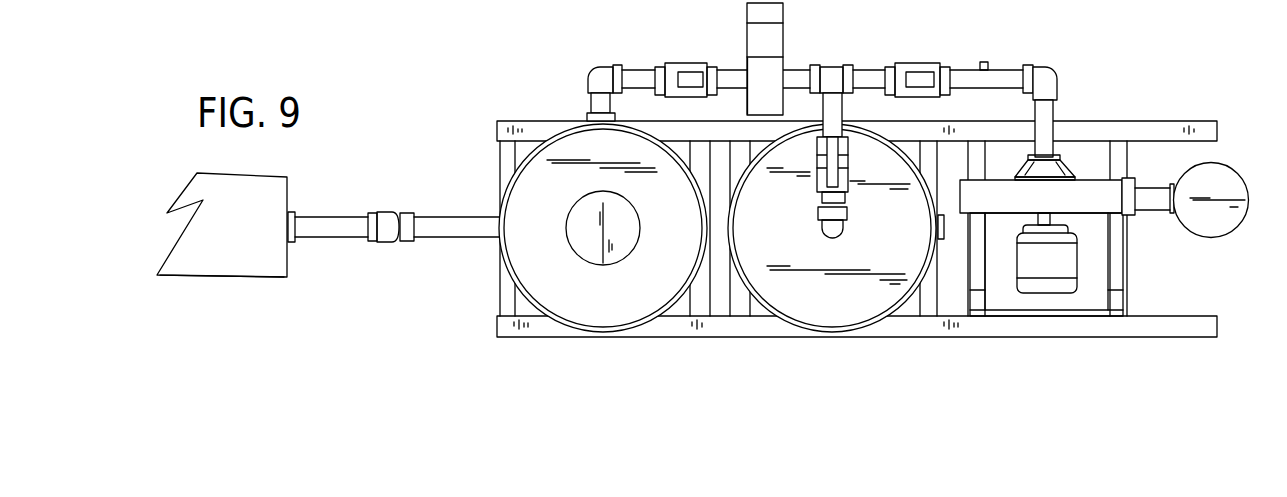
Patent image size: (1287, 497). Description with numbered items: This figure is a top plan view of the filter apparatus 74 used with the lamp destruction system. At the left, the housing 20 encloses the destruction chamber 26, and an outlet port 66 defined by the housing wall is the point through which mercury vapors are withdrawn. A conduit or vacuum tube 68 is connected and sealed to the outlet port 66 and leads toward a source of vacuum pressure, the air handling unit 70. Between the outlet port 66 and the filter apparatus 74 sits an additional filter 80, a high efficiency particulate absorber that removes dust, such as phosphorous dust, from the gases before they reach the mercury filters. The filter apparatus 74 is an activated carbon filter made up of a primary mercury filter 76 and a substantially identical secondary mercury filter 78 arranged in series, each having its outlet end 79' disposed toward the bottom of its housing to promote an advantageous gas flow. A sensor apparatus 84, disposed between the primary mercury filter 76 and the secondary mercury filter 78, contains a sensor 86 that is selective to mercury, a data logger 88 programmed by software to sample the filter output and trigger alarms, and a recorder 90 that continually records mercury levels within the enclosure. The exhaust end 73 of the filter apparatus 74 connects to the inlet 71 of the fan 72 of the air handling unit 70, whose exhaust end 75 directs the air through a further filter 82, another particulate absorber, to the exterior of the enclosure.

The housing 20 is at (256, 251).
The destruction chamber 26 is at (237, 266).
The outlet port 66 is at (290, 210).
The vacuum tube 68 is at (332, 240).
The air handling unit 70 is at (1091, 153).
The inlet 71 is at (1040, 152).
The fan 72 is at (1093, 210).
The exhaust end 73 is at (1047, 122).
The filter apparatus 74 is at (645, 348).
The exhaust end 75 is at (1128, 208).
The primary mercury filter 76 is at (490, 294).
The secondary mercury filter 78 is at (836, 350).
The outlet end 79' is at (570, 90).
The additional filter 80 is at (590, 202).
The further filter 82 is at (1225, 188).
The sensor apparatus 84 is at (763, 120).
The sensor 86 is at (752, 15).
The data logger 88 is at (755, 40).
The recorder 90 is at (758, 100).